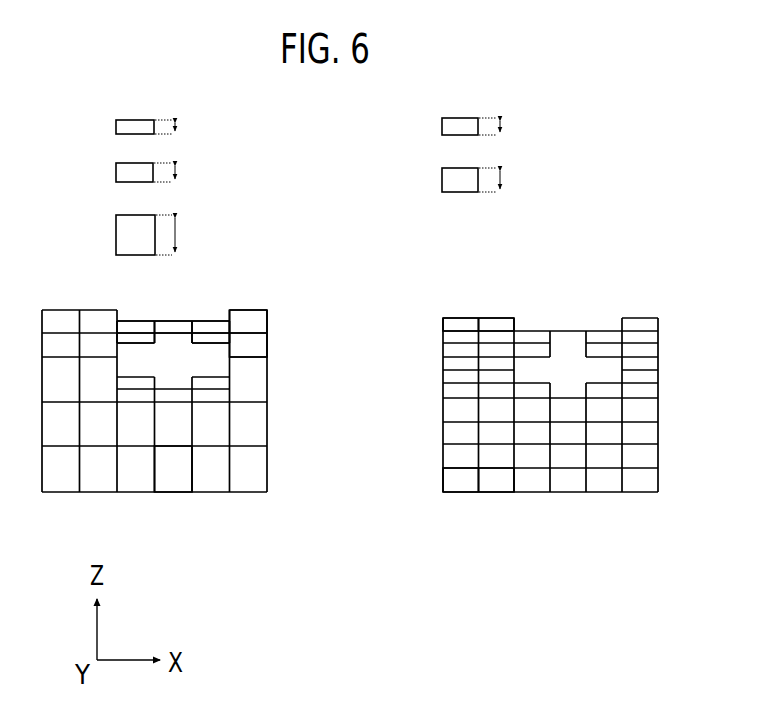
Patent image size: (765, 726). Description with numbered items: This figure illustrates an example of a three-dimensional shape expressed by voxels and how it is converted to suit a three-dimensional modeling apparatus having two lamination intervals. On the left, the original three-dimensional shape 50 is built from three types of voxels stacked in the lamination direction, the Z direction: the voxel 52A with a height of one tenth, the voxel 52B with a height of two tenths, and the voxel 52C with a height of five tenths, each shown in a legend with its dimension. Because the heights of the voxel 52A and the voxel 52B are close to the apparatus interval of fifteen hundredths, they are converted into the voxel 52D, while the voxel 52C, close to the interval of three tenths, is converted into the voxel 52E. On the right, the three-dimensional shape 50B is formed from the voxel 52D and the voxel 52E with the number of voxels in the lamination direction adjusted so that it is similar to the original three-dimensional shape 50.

The three-dimensional shape 50 is at (240, 286).
The three-dimensional shape 50B is at (573, 286).
The voxel 52A is at (116, 125).
The voxel 52B is at (116, 170).
The voxel 52C is at (116, 235).
The voxel 52D is at (440, 125).
The voxel 52E is at (440, 178).